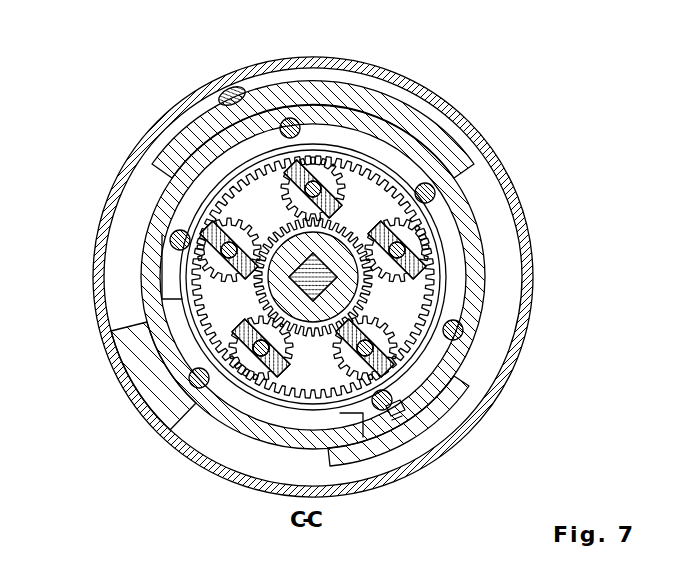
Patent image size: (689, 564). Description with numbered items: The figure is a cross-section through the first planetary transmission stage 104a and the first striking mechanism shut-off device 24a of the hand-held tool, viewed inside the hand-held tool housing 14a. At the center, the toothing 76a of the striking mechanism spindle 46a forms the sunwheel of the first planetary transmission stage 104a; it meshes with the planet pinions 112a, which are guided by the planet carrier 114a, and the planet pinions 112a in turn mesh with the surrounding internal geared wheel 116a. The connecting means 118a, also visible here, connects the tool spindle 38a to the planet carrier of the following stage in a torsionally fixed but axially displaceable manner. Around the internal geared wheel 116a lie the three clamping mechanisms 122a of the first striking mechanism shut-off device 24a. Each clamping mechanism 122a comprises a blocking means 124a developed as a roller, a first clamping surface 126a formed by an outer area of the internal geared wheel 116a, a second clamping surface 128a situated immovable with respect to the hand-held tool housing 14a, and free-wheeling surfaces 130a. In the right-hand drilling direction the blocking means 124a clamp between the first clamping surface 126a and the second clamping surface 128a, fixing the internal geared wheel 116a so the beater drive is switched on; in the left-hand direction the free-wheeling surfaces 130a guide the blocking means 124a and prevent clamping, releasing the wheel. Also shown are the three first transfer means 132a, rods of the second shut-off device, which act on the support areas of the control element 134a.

The hand-held tool housing 14a is at (470, 313).
The first striking mechanism shut-off device 24a is at (486, 196).
The tool spindle 38a is at (322, 268).
The striking mechanism spindle 46a is at (435, 197).
The toothing 76a is at (195, 404).
The first planetary transmission stage 104a is at (487, 107).
The planet pinions 112a is at (258, 352).
The planet carrier 114a is at (250, 362).
The internal geared wheel 116a is at (291, 402).
The connecting means 118a is at (276, 248).
The clamping mechanisms 122a is at (458, 245).
The blocking means 124a is at (395, 420).
The first clamping surface 126a is at (413, 373).
The second clamping surface 128a is at (382, 408).
The free-wheeling surfaces 130a is at (398, 440).
The first transfer means 132a is at (290, 118).
The control element 134a is at (224, 92).